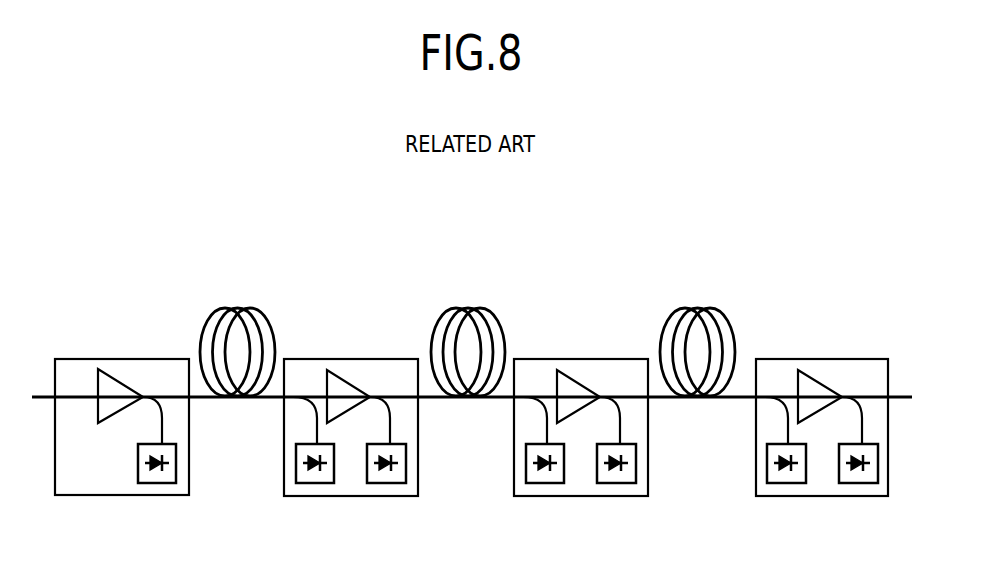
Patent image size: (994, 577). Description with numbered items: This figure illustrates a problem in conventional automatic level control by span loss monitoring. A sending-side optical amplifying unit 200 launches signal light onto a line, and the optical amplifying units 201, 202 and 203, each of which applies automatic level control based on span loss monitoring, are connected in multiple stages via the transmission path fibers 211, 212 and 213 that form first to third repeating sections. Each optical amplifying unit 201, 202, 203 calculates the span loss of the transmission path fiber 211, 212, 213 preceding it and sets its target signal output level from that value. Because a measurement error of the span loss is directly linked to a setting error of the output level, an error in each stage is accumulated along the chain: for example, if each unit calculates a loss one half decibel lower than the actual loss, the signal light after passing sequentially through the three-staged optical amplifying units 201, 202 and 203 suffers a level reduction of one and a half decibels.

The optical amplifier (first stage) with pump laser diode 200 is at (83, 359).
The optical amplifying unit 201 is at (330, 359).
The optical amplifying unit 202 is at (560, 359).
The optical amplifying unit 203 is at (813, 357).
The transmission path fiber 211 is at (227, 308).
The transmission path fiber 212 is at (463, 308).
The transmission path fiber 213 is at (702, 308).